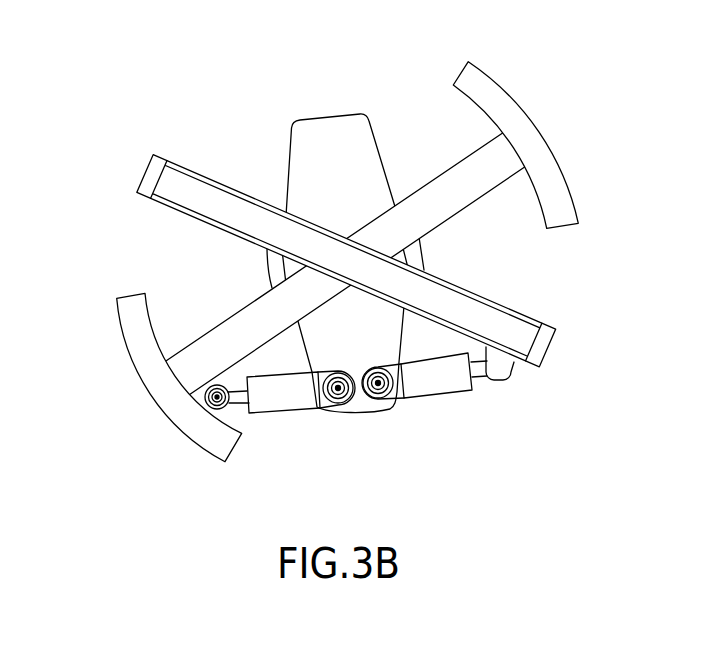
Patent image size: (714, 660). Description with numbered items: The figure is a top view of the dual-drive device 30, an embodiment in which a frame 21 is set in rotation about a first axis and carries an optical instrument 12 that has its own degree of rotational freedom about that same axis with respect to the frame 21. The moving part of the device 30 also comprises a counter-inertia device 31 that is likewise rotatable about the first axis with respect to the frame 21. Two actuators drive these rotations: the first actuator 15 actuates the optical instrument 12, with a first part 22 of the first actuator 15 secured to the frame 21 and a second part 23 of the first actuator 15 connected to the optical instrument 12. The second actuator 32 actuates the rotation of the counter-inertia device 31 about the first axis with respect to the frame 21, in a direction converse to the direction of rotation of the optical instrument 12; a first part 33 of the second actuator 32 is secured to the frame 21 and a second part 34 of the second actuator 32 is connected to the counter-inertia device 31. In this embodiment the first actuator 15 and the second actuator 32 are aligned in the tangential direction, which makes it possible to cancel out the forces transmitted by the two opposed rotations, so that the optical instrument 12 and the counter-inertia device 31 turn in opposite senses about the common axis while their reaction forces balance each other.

The dual-drive device 30 is at (308, 276).
The optical instrument 12 is at (145, 175).
The frame 21 is at (289, 158).
The counter-inertia device 31 is at (118, 314).
The second part of the second actuator 34 is at (188, 393).
The second actuator 32 is at (277, 401).
The first part of the second actuator 33 is at (341, 402).
The first part of the first actuator 22 is at (384, 398).
The first actuator 15 is at (446, 382).
The second part of the first actuator 23 is at (503, 373).